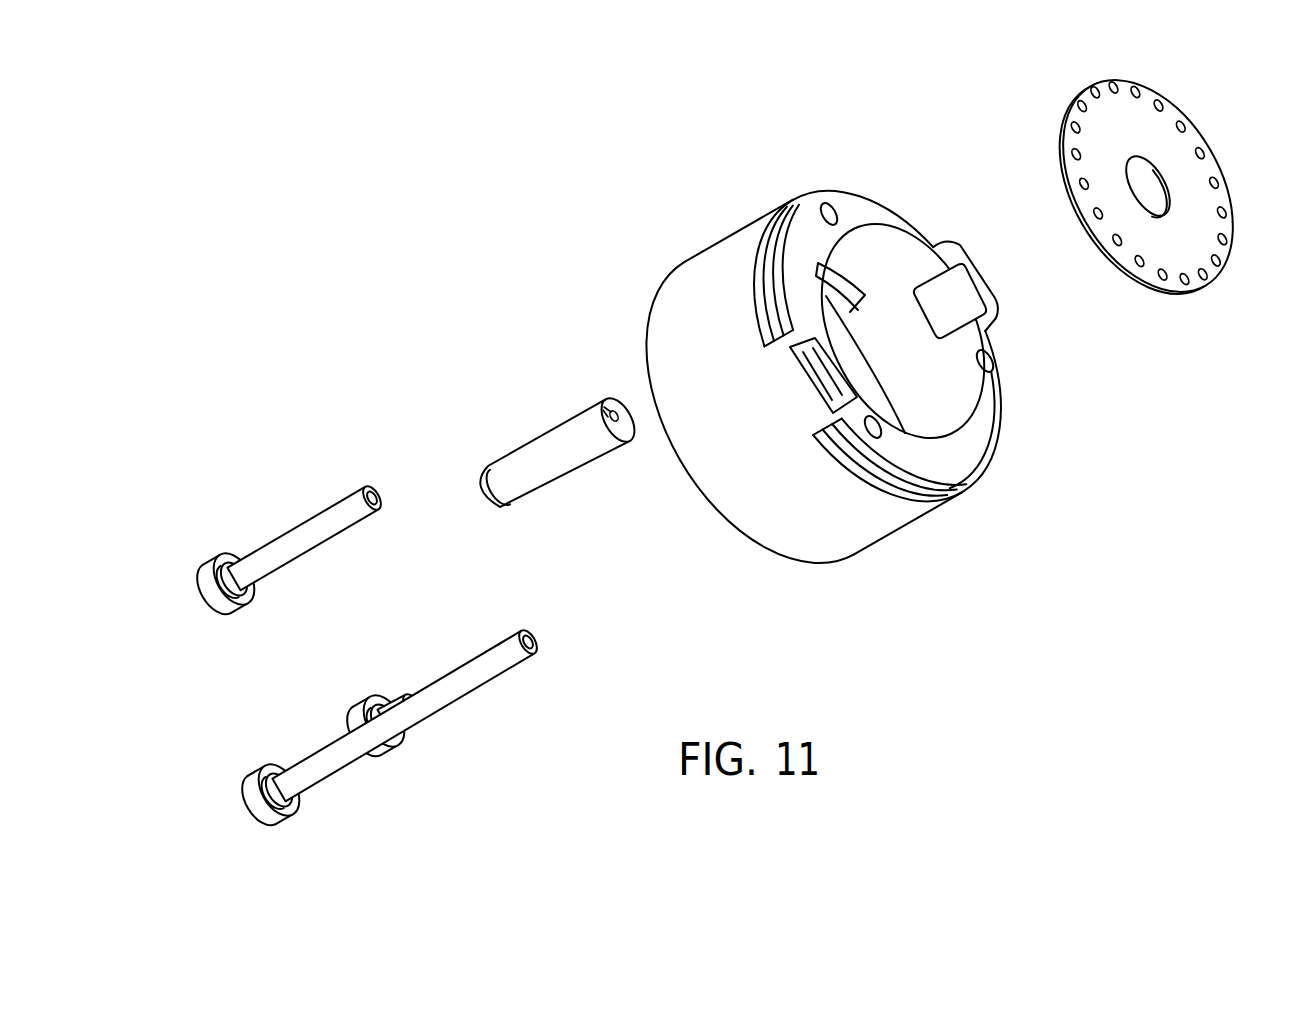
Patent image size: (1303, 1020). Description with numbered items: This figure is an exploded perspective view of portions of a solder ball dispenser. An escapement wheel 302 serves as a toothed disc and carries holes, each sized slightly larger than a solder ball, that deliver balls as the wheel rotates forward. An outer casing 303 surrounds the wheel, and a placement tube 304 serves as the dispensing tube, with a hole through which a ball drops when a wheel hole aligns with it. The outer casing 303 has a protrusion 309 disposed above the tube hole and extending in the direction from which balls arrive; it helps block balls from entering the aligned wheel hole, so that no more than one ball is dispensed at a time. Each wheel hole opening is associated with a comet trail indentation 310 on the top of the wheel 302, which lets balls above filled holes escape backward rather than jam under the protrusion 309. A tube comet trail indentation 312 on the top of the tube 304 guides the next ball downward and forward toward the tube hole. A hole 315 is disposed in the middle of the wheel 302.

The escapement wheel 302 is at (1207, 285).
The outer casing 303 is at (861, 556).
The placement tube 304 is at (539, 493).
The protrusion 309 is at (862, 305).
The comet trail indentation 310 is at (1075, 134).
The tube comet trail indentation 312 is at (613, 404).
The hole 315 is at (1143, 195).